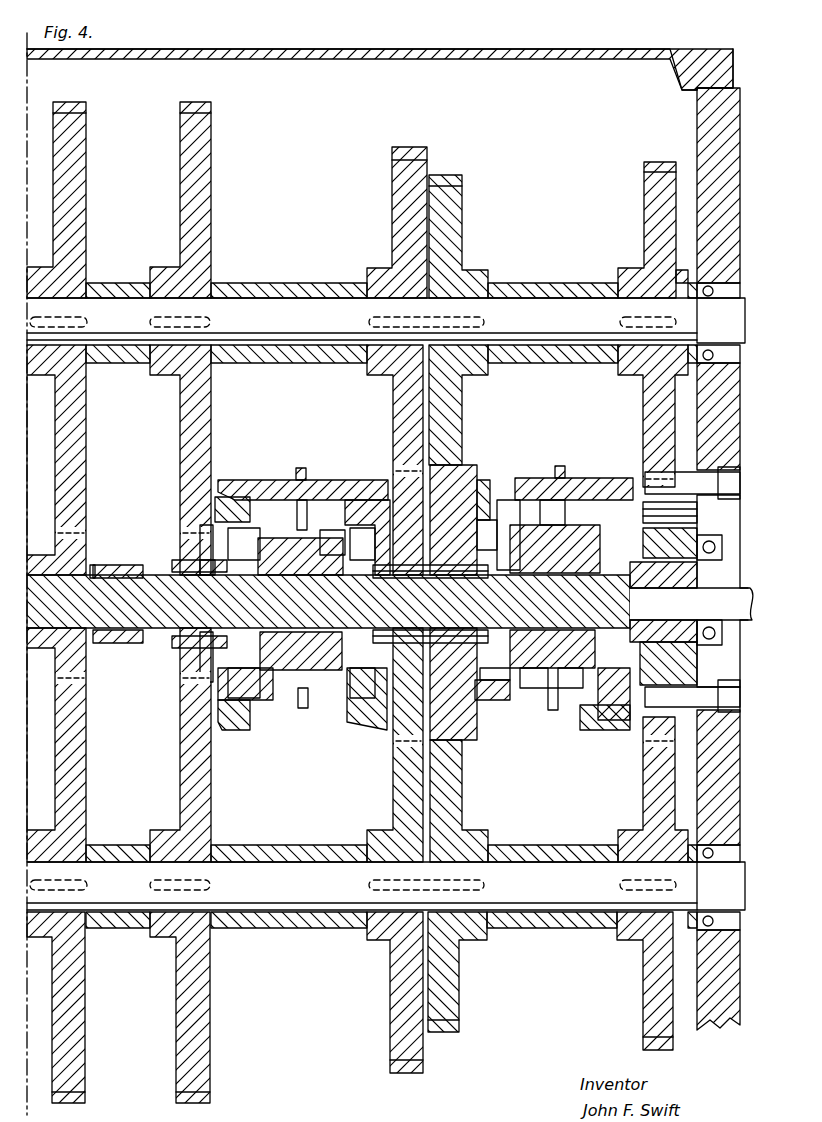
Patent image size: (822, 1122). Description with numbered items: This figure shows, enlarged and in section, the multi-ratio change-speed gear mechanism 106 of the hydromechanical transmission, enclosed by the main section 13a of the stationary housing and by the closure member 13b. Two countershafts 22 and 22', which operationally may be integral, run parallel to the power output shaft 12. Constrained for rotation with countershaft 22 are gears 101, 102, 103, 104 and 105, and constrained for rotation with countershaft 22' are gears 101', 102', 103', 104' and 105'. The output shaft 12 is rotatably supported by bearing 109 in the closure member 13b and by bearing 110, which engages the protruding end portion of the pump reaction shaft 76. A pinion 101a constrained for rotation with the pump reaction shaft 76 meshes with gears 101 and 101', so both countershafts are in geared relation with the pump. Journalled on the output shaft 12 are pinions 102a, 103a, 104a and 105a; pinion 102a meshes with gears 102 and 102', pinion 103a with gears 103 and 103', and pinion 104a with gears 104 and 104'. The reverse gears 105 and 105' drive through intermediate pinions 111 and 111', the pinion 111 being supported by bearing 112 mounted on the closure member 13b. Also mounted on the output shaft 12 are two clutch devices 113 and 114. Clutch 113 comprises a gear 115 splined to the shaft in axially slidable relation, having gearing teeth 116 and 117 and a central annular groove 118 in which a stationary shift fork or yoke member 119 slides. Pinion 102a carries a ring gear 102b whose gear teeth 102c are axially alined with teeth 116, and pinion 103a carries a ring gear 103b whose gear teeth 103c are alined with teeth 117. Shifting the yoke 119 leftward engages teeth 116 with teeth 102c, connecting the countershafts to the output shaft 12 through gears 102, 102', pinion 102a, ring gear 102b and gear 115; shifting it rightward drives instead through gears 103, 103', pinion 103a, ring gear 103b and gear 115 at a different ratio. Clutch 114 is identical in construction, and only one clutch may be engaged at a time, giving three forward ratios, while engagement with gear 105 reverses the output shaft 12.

The power output shaft 12 is at (272, 611).
The countershaft 22 is at (386, 305).
The countershaft 22' is at (386, 873).
The pump reaction shaft 76 is at (98, 562).
The gear 101 is at (80, 200).
The gear 102 is at (205, 200).
The gear 103 is at (380, 222).
The gear 104 is at (472, 233).
The gear 105 is at (642, 227).
The gear 101' is at (81, 1011).
The gear 102' is at (206, 1007).
The gear 103' is at (379, 992).
The gear 104' is at (475, 972).
The gear 105' is at (622, 981).
The pinion 101a is at (82, 648).
The pinion 102a is at (176, 558).
The ring gear 102b is at (232, 480).
The gear teeth 102c is at (262, 705).
The pinion 103a is at (430, 586).
The ring gear 103b is at (384, 498).
The gear teeth 103c is at (365, 705).
The pinion 104a is at (478, 480).
The pinion 105a is at (600, 748).
The multi-ratio change-speed gear mechanism 106 is at (453, 45).
The bearing 109 is at (711, 648).
The bearing 110 is at (127, 561).
The intermediate pinion 111 is at (713, 467).
The intermediate pinion 111' is at (716, 714).
The bearing 112 is at (722, 495).
The clutch device 113 is at (322, 480).
The clutch device 114 is at (582, 478).
The gear 115 is at (292, 528).
The gearing teeth 116 is at (270, 540).
The gearing teeth 117 is at (330, 530).
The annular groove 118 is at (300, 575).
The shift fork or yoke member 119 is at (303, 500).
The main section 13a is at (553, 49).
The closure member 13b is at (735, 180).